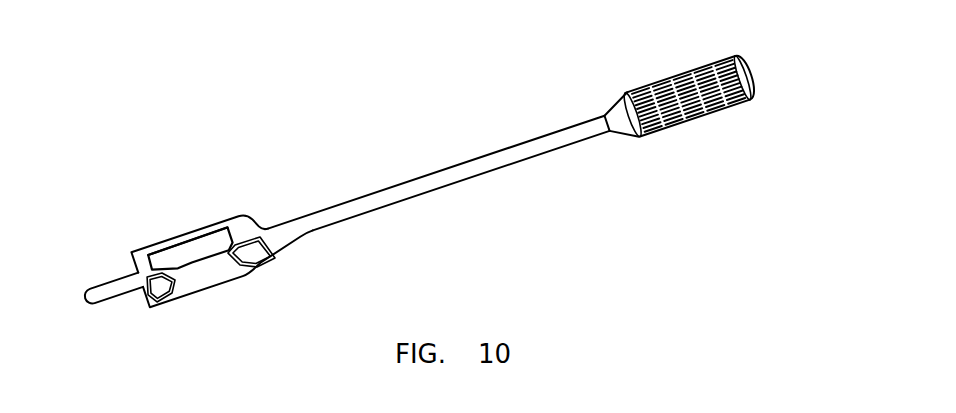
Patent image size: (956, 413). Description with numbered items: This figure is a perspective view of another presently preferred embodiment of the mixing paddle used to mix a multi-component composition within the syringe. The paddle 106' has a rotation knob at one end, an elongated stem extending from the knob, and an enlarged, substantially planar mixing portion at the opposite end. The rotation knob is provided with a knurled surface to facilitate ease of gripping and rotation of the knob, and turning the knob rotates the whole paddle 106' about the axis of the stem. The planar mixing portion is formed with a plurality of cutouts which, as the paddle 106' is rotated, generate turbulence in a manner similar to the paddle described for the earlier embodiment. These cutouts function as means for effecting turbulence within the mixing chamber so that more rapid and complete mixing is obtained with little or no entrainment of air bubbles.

The paddle 106' is at (450, 198).